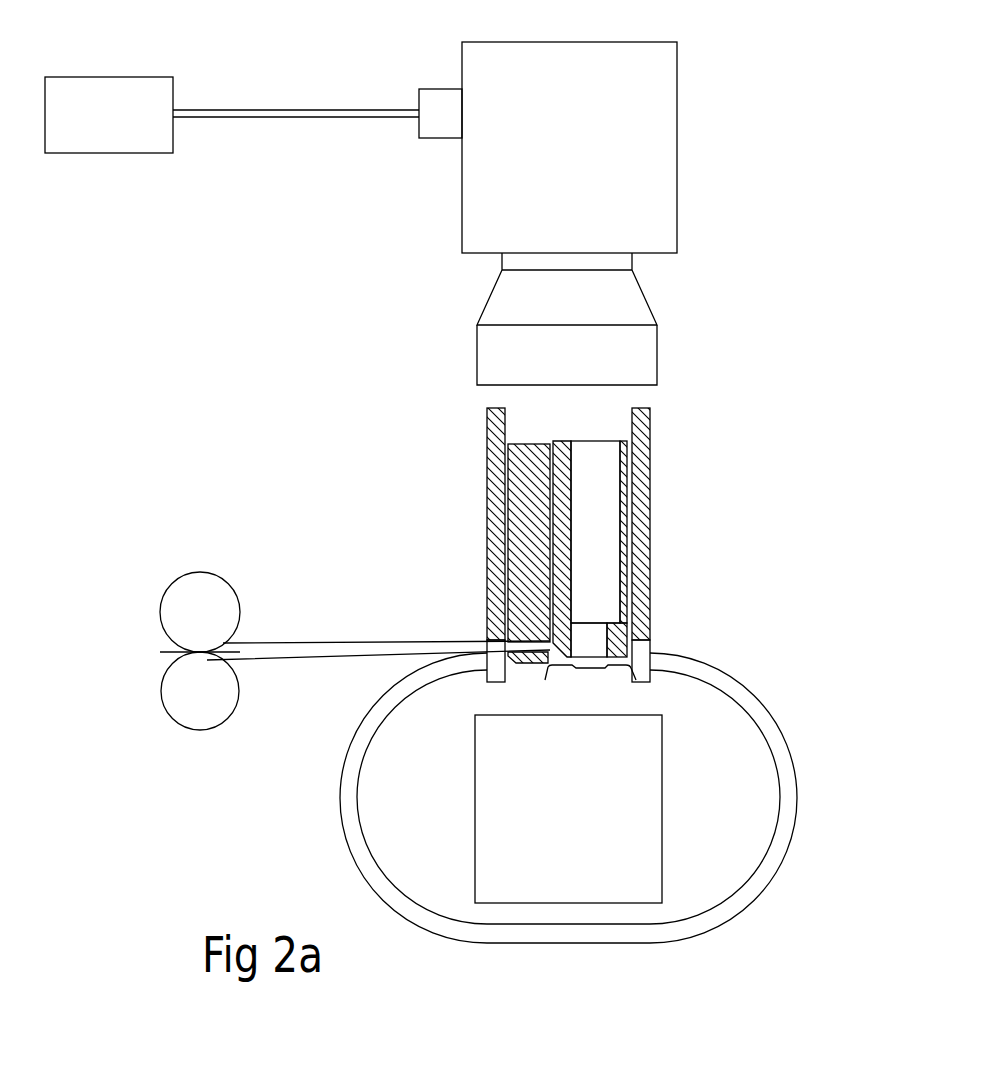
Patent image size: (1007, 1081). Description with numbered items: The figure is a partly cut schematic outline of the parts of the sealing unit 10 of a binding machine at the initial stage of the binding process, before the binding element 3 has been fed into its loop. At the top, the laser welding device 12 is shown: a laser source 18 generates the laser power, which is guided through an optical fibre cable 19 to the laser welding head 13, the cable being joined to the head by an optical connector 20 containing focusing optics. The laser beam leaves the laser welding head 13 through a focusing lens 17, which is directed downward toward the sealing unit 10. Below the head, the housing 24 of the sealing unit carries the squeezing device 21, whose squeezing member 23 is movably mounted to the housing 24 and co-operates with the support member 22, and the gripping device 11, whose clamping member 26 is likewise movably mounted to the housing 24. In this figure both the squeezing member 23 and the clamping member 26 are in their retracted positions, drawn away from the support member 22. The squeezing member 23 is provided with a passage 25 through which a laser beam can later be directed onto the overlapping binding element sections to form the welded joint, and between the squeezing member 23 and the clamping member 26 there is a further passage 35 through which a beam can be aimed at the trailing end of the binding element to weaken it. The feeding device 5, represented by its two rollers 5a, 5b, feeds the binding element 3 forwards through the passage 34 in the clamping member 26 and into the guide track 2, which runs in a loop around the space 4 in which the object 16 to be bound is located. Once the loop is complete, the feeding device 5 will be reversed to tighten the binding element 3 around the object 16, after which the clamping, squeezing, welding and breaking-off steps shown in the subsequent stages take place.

The guide track 2 is at (743, 688).
The binding element 3 is at (333, 647).
The space 4 is at (715, 875).
The feeding device 5 is at (228, 567).
The upper roller 5a is at (193, 580).
The lower roller 5b is at (187, 717).
The sealing unit 10 is at (767, 245).
The gripping device 11 is at (517, 667).
The laser welding device 12 is at (305, 227).
The laser welding head 13 is at (680, 145).
The object 16 is at (655, 803).
The focusing lens 17 is at (490, 350).
The laser source 18 is at (110, 142).
The optical fibre cable 19 is at (287, 113).
The optical connector 20 is at (433, 128).
The squeezing device 21 is at (622, 667).
The support member 22 is at (573, 675).
The squeezing member 23 is at (620, 647).
The housing 24 is at (643, 472).
The passage 25 is at (598, 637).
The clamping member 26 is at (538, 658).
The passage 34 is at (522, 647).
The passage 35 is at (558, 468).